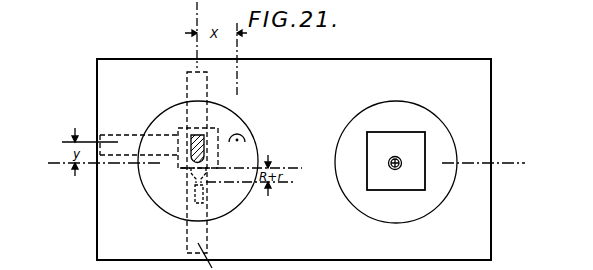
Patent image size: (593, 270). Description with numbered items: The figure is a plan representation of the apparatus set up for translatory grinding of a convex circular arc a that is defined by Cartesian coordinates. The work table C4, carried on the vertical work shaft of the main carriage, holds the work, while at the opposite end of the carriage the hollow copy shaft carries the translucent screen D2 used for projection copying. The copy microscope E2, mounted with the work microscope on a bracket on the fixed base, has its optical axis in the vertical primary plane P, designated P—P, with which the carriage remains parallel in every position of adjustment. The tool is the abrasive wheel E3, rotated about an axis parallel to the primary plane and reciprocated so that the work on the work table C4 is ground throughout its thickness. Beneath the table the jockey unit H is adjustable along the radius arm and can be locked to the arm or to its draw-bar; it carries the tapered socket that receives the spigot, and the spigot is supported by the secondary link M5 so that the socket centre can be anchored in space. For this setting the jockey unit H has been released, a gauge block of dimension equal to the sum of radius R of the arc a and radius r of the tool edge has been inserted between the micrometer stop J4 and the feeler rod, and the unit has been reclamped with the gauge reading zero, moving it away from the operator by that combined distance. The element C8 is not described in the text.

The work table C4 is at (168, 115).
The abrasive wheel E3 is at (197, 134).
The circular arc a is at (240, 132).
The translucent screen D2 is at (393, 132).
The copy microscope E2 is at (403, 157).
The jockey unit H is at (178, 135).
The primary plane P is at (291, 163).
The secondary link M5 is at (135, 140).
The neck C8 is at (188, 174).
The micrometer stop J4 is at (191, 199).